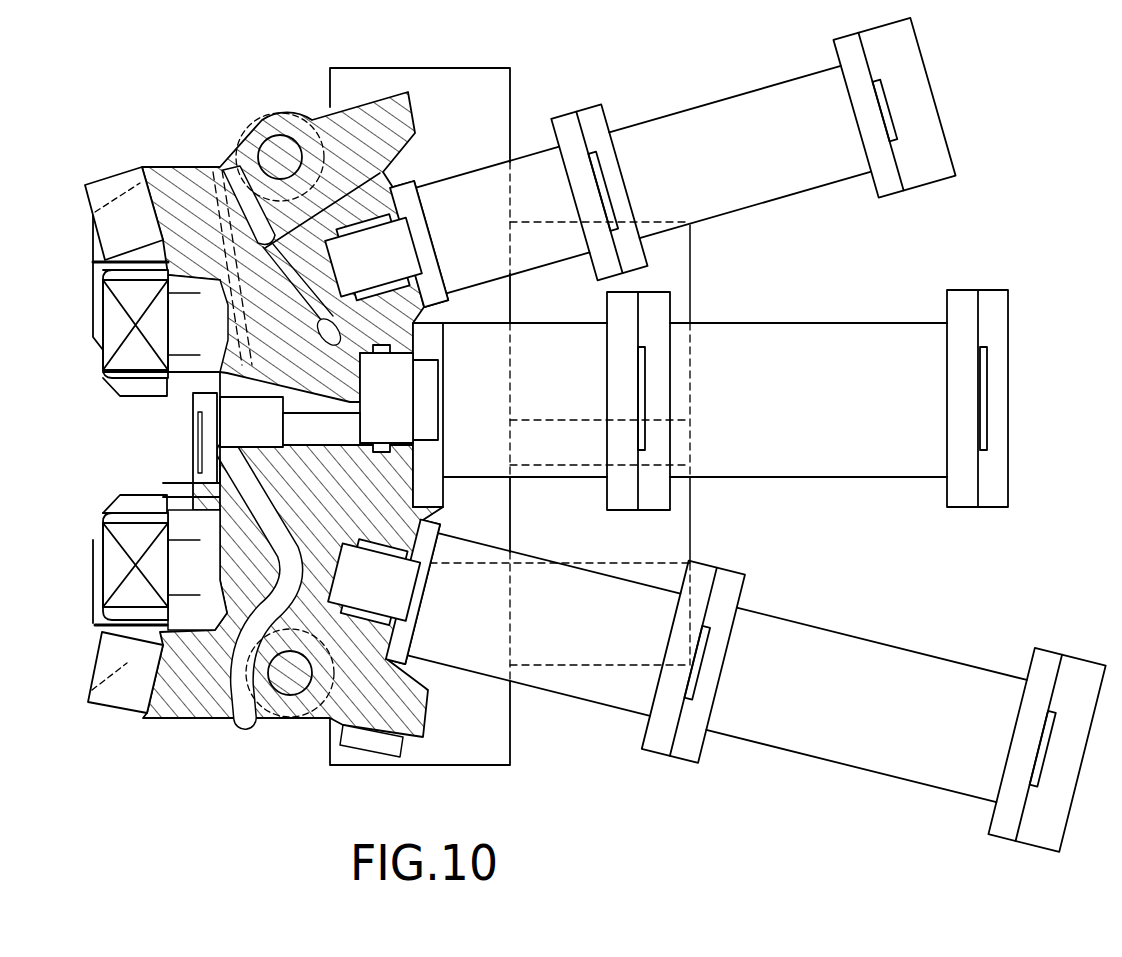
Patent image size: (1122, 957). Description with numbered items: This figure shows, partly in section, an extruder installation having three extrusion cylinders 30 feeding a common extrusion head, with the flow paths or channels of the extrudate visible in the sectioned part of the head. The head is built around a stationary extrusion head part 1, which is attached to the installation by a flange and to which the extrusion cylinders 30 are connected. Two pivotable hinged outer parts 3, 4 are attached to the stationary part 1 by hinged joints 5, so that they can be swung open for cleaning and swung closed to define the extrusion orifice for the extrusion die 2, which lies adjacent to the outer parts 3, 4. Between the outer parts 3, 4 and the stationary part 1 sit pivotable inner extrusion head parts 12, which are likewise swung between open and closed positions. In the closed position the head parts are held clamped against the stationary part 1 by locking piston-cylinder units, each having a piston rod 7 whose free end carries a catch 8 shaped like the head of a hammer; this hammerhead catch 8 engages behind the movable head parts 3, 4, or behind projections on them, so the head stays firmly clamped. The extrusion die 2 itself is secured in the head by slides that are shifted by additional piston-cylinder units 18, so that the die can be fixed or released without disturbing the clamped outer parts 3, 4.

The stationary extrusion head part 1 is at (465, 750).
The extrusion die 2 is at (207, 438).
The pivotable hinged outer part 3 is at (147, 163).
The pivotable hinged outer part 4 is at (192, 708).
The hinged joint 5 is at (272, 145).
The piston rod 7 is at (178, 300).
The catch 8 is at (115, 322).
The pivotable inner extrusion head part 12 is at (225, 412).
The additional piston-cylinder unit 18 is at (115, 197).
The extrusion cylinder 30 is at (785, 187).